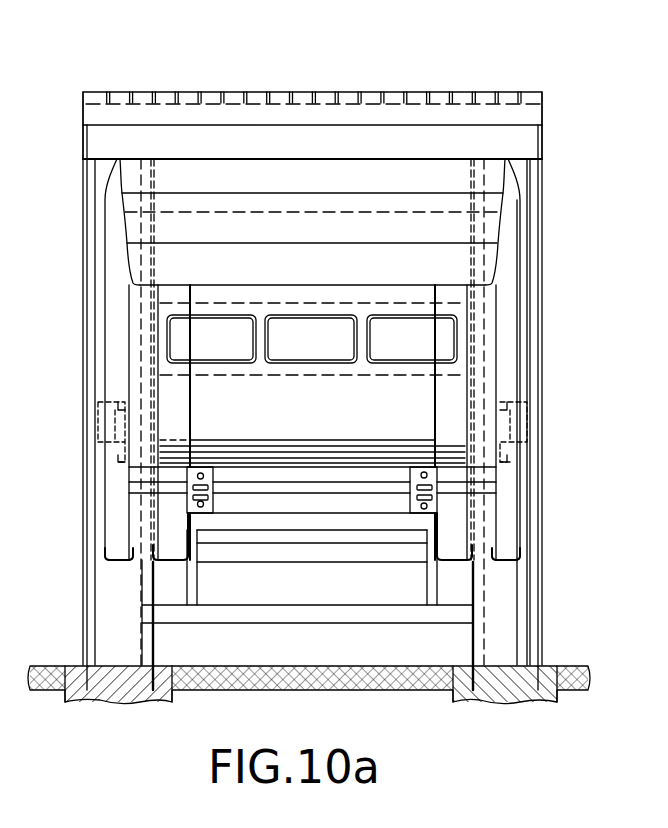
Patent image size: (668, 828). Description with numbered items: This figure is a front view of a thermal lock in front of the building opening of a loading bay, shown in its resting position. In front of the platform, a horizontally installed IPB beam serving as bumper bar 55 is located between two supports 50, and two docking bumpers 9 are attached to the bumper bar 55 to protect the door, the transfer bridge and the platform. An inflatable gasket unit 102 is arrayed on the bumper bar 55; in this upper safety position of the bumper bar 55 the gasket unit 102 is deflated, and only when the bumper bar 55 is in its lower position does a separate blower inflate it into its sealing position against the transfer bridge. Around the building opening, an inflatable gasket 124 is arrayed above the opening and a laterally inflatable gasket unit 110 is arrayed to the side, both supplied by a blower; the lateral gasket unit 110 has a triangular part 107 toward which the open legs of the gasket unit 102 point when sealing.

The inflatable gasket 124 is at (417, 178).
The support 50 is at (112, 432).
The inflatable gasket unit 102 is at (235, 450).
The docking bumper 9 is at (427, 475).
The laterally inflatable gasket unit 110 is at (510, 503).
The bumper bar 55 is at (273, 500).
The triangular part 107 is at (450, 550).